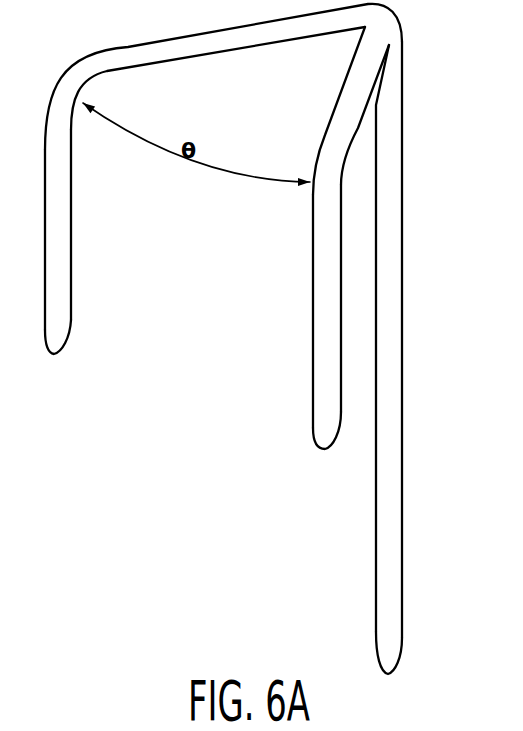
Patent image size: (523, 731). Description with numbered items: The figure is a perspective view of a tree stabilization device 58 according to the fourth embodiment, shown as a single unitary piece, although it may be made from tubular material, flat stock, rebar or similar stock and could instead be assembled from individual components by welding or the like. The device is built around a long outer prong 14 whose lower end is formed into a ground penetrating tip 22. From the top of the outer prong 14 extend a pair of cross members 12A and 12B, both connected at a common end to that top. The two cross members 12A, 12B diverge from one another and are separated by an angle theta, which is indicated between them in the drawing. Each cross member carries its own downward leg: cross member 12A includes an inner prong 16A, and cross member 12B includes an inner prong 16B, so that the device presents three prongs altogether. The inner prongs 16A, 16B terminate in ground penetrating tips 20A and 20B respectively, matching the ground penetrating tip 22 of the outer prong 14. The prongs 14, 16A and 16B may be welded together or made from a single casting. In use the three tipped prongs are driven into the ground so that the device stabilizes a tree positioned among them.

The tree stabilization device 58 is at (277, 346).
The cross member 12A is at (347, 102).
The cross member 12B is at (135, 48).
The outer prong 14 is at (427, 365).
The inner prong 16A is at (288, 357).
The inner prong 16B is at (97, 270).
The ground penetrating tip 20A is at (334, 447).
The ground penetrating tip 20B is at (63, 348).
The ground penetrating tip 22 is at (402, 657).